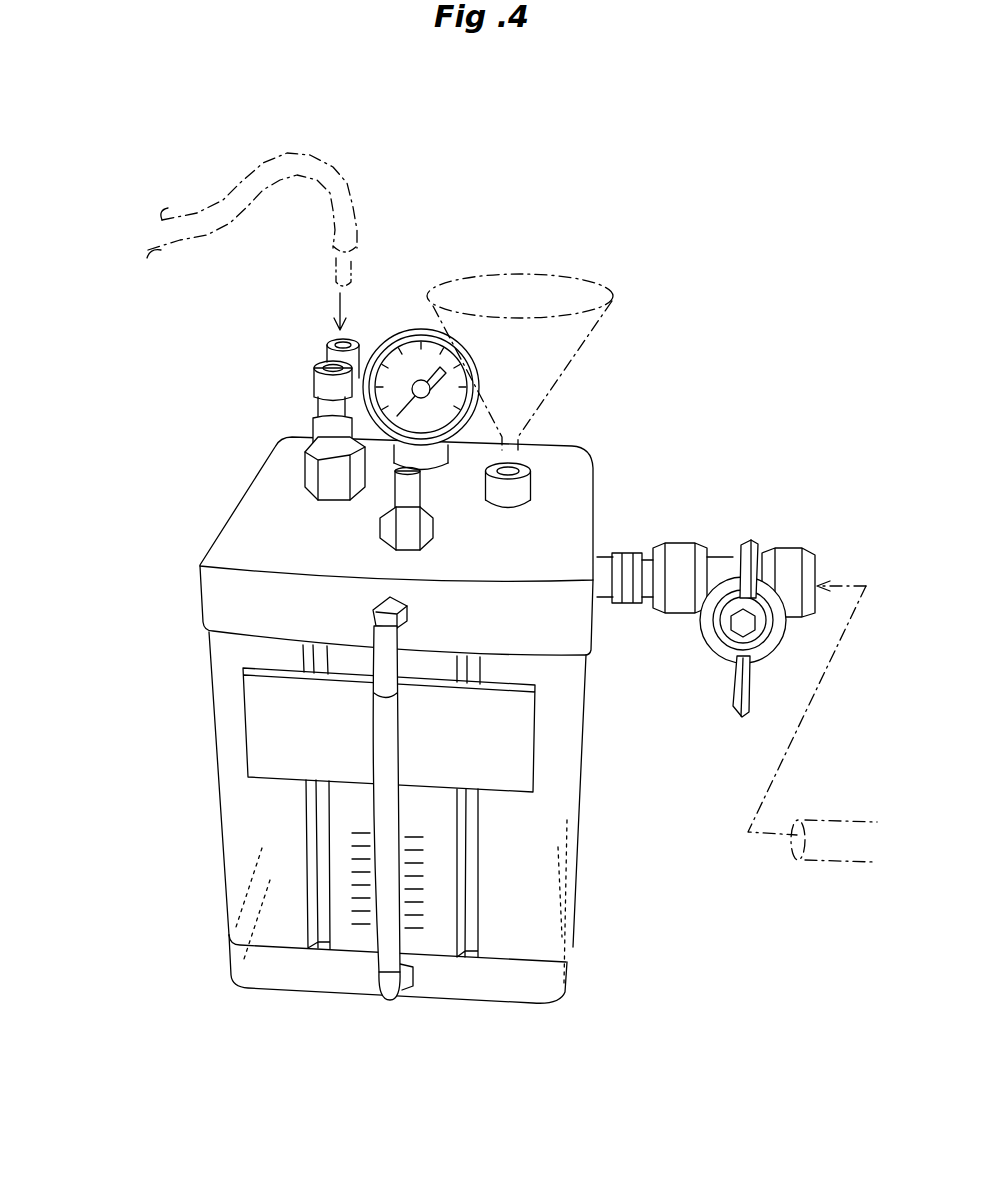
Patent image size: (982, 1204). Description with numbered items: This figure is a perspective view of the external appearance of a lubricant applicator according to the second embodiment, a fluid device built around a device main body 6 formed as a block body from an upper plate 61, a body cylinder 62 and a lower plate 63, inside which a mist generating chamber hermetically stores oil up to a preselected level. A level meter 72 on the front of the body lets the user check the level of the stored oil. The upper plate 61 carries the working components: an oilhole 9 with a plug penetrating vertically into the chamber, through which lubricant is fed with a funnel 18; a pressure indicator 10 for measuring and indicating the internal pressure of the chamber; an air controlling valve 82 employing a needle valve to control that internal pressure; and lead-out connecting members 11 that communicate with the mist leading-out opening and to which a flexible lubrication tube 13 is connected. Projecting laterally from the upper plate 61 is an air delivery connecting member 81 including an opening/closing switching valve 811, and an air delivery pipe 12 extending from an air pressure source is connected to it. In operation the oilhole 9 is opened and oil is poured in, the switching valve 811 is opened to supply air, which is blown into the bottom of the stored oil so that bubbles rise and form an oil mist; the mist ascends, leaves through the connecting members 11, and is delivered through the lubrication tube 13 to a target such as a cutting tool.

The device main body 6 is at (226, 520).
The upper plate 61 is at (200, 597).
The body cylinder 62 is at (213, 783).
The lower plate 63 is at (230, 962).
The level meter 72 is at (372, 917).
The lead-out connecting member 11 is at (327, 348).
The pressure indicator 10 is at (418, 327).
The air controlling valve 82 is at (433, 524).
The oilhole 9 is at (533, 483).
The funnel 18 is at (570, 278).
The lubrication tube 13 is at (248, 175).
The air delivery connecting member 81 is at (680, 545).
The opening/closing switching valve 811 is at (730, 693).
The air delivery pipe 12 is at (823, 863).